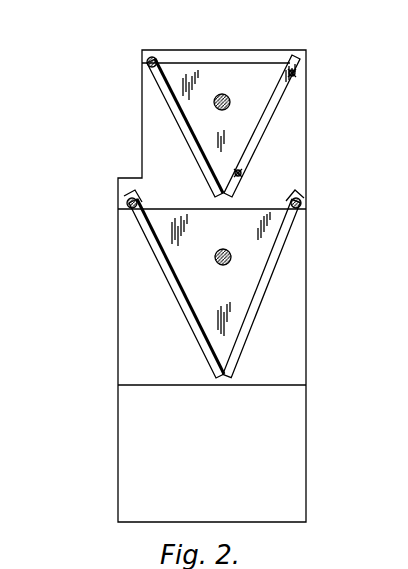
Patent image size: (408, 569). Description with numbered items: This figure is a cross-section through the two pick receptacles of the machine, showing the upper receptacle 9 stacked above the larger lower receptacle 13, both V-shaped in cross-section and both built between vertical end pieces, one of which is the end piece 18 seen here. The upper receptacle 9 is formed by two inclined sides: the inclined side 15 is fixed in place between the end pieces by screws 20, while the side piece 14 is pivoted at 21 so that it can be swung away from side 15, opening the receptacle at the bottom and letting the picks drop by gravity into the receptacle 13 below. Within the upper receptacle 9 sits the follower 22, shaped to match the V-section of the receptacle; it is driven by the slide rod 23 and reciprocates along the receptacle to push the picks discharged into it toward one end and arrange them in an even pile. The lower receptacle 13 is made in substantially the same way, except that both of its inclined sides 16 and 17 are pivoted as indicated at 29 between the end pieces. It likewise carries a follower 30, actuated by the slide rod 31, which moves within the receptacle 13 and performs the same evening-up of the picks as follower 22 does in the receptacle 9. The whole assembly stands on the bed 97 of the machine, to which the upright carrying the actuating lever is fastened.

The upper receptacle 9 is at (243, 62).
The lower receptacle 13 is at (176, 207).
The inclined side 14 is at (172, 106).
The inclined side 15 is at (273, 120).
The inclined side 16 is at (161, 265).
The inclined side 17 is at (274, 270).
The end piece 18 is at (136, 346).
The screw 20 is at (295, 73).
The pivot 21 is at (147, 63).
The follower 22 is at (182, 80).
The slide rod 23 is at (222, 94).
The pivot 29 is at (126, 203).
The follower 30 is at (243, 300).
The slide rod 31 is at (219, 250).
The bed 97 is at (146, 441).